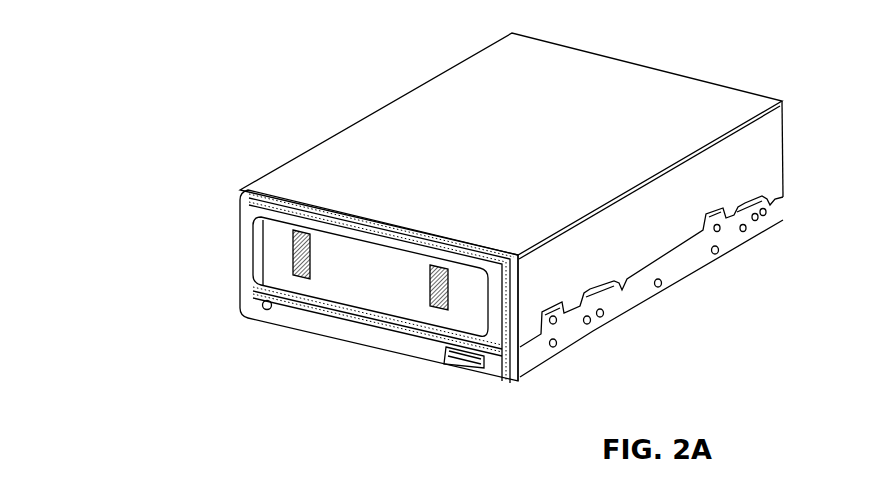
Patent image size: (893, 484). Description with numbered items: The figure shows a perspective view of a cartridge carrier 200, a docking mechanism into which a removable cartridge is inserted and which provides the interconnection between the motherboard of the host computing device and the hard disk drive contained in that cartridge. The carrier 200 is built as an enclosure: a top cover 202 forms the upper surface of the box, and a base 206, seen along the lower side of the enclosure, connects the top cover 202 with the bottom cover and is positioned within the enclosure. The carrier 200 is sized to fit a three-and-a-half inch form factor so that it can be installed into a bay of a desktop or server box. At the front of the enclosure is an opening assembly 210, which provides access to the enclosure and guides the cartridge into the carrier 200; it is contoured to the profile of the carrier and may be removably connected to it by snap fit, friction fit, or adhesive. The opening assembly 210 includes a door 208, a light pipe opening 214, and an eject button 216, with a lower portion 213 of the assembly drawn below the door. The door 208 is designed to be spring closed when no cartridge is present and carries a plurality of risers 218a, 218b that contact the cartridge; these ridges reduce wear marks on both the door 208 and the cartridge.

The cartridge carrier 200 is at (467, 243).
The top cover 202 is at (542, 151).
The base 206 is at (684, 268).
The door 208 is at (277, 265).
The opening assembly 210 is at (336, 331).
The lower bezel portion 213 is at (471, 373).
The light pipe opening 214 is at (254, 313).
The eject button 216 is at (443, 367).
The riser 218a is at (293, 256).
The riser 218b is at (533, 324).